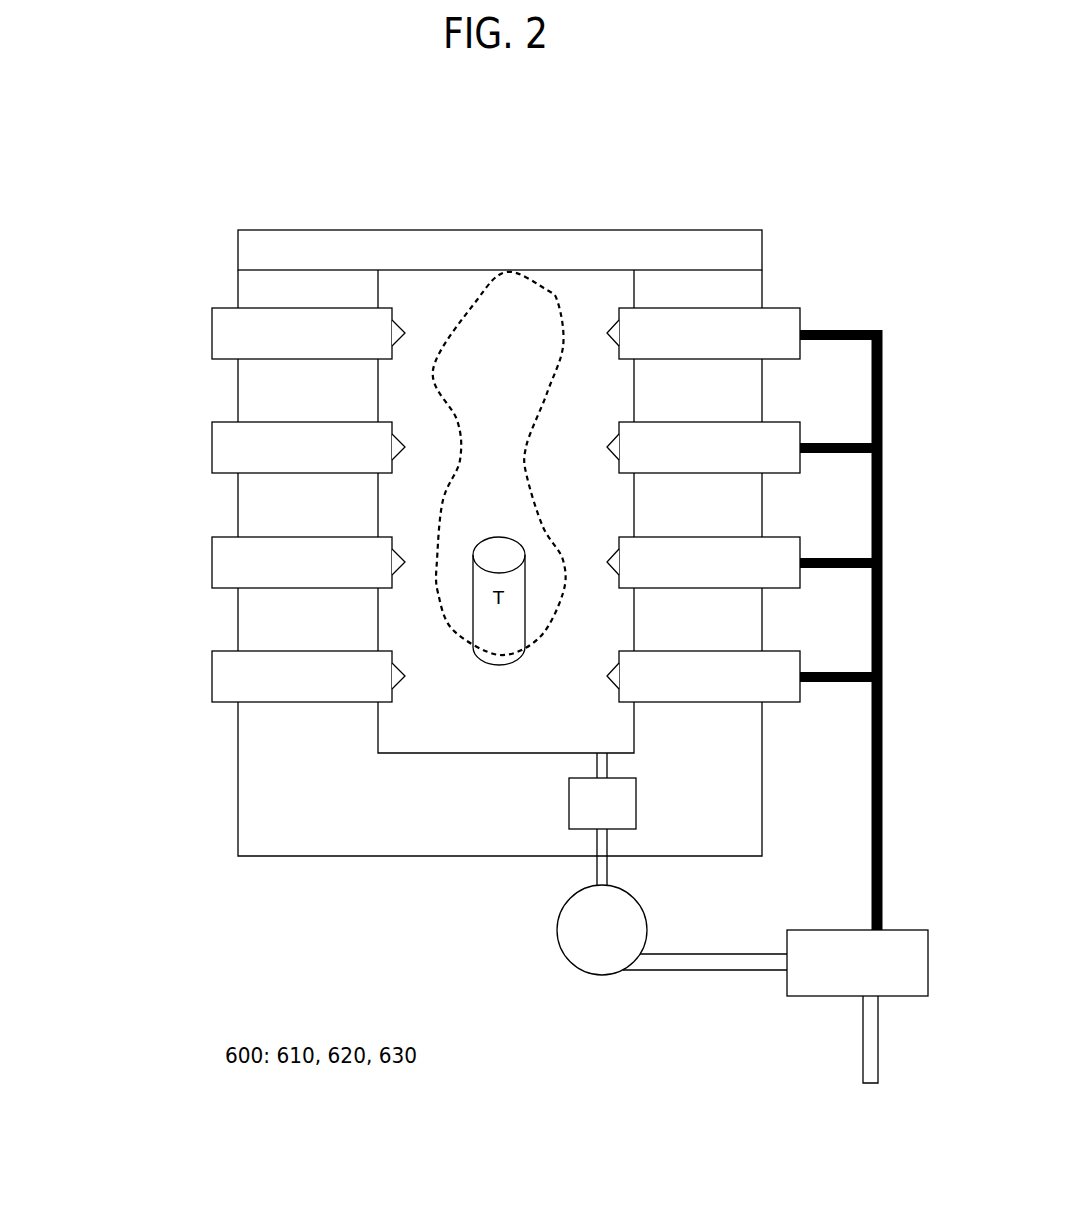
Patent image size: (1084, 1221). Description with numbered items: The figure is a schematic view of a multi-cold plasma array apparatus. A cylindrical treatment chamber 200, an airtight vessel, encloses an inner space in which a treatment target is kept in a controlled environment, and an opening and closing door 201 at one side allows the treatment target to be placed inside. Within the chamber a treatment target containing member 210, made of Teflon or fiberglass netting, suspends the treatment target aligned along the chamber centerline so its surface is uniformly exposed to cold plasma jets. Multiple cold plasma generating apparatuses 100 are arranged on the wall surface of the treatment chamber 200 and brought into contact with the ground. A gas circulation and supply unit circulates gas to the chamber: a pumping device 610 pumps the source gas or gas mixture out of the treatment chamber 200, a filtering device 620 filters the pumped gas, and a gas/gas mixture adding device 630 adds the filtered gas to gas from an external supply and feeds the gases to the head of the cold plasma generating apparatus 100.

The cold plasma generating apparatus 100 is at (203, 337).
The cylindrical treatment chamber 200 is at (237, 783).
The opening and closing door 201 is at (237, 249).
The treatment target containing member 210 is at (555, 298).
The pumping device 610 is at (569, 812).
The filtering device 620 is at (558, 928).
The gas/gas mixture adding device 630 is at (783, 984).